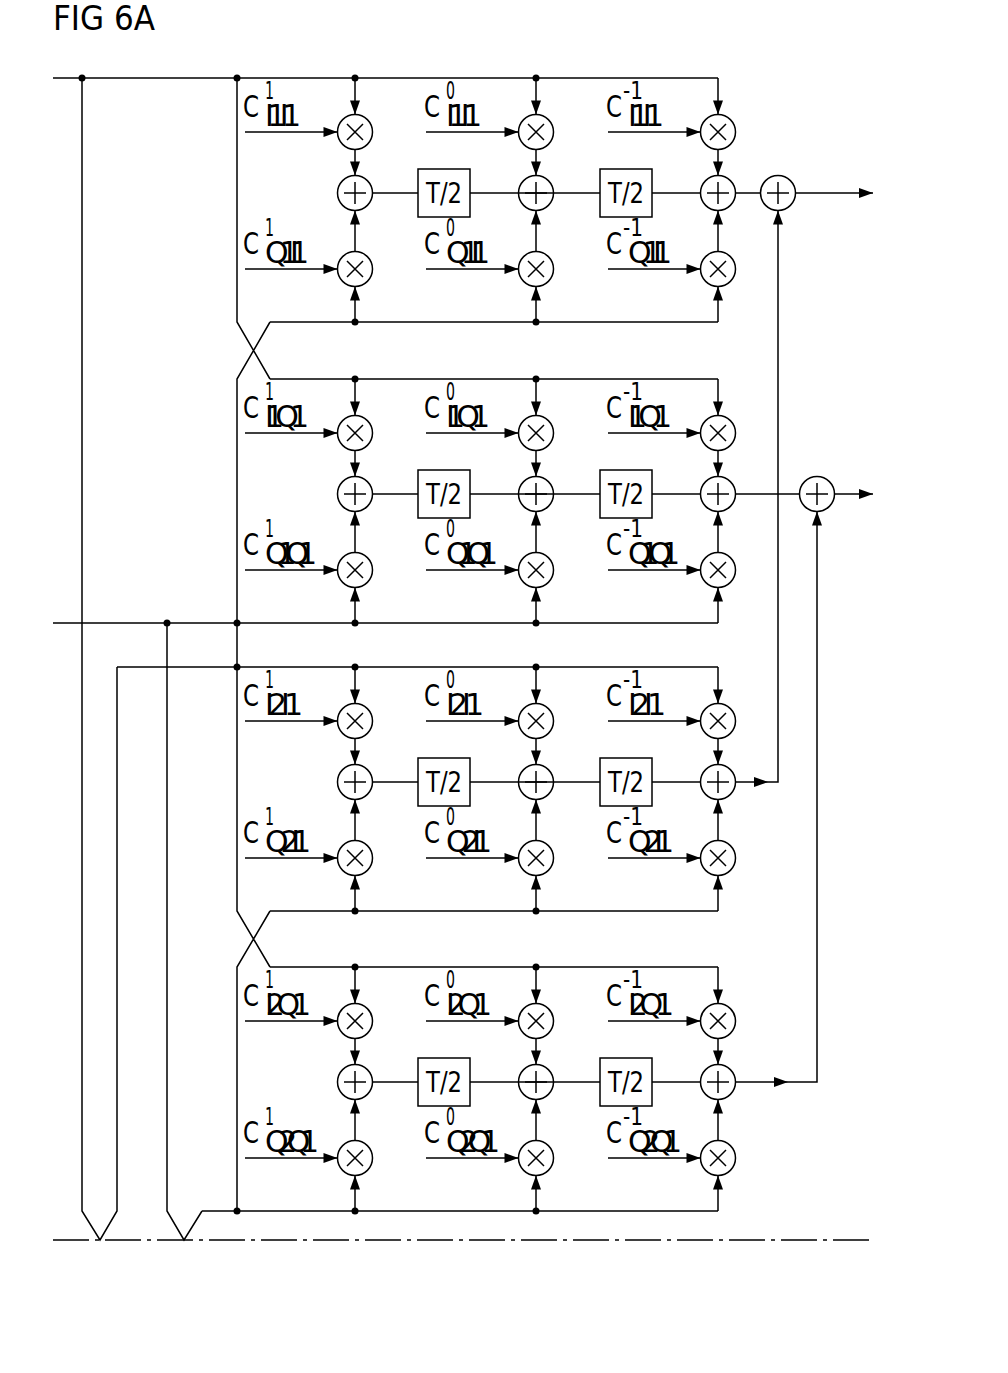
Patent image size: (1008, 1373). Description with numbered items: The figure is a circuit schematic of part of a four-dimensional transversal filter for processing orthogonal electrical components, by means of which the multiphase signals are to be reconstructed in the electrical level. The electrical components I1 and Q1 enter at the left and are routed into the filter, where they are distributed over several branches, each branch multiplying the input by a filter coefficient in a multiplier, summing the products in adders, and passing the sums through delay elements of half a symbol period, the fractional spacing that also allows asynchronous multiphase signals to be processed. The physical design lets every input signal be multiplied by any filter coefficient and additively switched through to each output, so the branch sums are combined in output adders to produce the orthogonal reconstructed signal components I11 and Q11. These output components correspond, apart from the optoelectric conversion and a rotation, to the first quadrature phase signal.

The in-phase electrical component I1 is at (385, 642).
The quadrature electrical component Q1 is at (385, 913).
The reconstructed in-phase signal component I11 is at (805, 469).
The reconstructed quadrature signal component Q11 is at (808, 770).